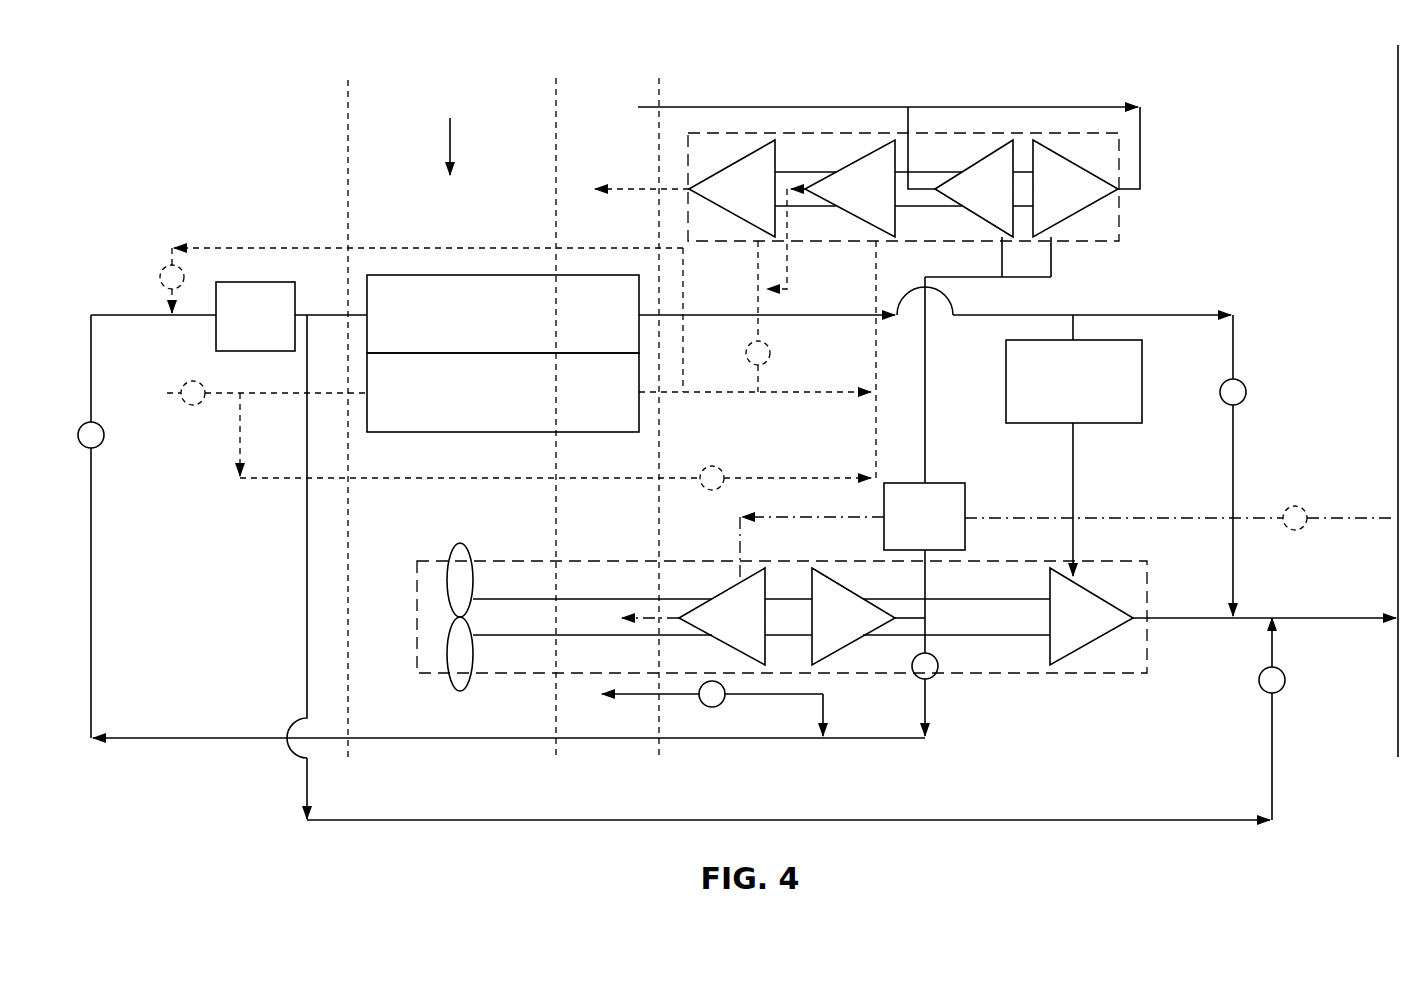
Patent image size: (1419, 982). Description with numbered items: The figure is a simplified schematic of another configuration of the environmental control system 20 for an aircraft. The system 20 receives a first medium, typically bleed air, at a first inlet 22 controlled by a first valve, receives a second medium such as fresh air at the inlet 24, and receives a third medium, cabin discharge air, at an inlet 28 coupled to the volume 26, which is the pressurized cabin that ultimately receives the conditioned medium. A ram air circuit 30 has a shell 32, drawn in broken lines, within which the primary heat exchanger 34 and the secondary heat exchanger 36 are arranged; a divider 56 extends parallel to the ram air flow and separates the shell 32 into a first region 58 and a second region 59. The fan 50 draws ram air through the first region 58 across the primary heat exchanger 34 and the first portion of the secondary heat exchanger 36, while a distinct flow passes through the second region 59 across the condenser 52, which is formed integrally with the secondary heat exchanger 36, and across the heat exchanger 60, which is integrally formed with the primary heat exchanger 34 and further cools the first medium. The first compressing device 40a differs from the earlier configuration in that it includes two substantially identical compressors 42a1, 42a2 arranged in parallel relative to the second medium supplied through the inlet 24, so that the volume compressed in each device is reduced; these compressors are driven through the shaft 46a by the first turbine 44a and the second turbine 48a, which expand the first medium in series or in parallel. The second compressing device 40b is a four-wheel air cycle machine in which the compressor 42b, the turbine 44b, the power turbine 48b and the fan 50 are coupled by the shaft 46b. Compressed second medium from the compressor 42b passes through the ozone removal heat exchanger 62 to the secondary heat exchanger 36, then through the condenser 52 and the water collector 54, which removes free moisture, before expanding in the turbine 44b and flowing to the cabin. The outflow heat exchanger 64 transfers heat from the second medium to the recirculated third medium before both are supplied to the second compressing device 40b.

The environmental control system 20 is at (129, 80).
The first inlet 22 is at (175, 393).
The inlet 24 is at (638, 107).
The volume 26 is at (1397, 195).
The inlet 28 is at (1393, 520).
The ram air circuit 30 is at (343, 112).
The shell 32 is at (345, 188).
The primary heat exchanger 34 is at (425, 432).
The secondary heat exchanger 36 is at (400, 274).
The first compressing device 40a is at (727, 132).
The second compressing device 40b is at (408, 597).
The first compressor 42a1 is at (1090, 198).
The second compressor 42a2 is at (1004, 155).
The compressor 42b is at (830, 660).
The first turbine 44a is at (887, 150).
The turbine 44b is at (1077, 652).
The shaft 46a is at (797, 172).
The shaft 46b is at (985, 625).
The second turbine 48a is at (718, 185).
The power turbine 48b is at (745, 662).
The fan 50 is at (460, 665).
The condenser 52 is at (610, 274).
The water collector 54 is at (1005, 380).
The divider 56 is at (556, 497).
The first region 58 is at (440, 247).
The second region 59 is at (592, 247).
The heat exchanger 60 is at (568, 432).
The ozone removal heat exchanger 62 is at (214, 330).
The outflow heat exchanger 64 is at (965, 497).